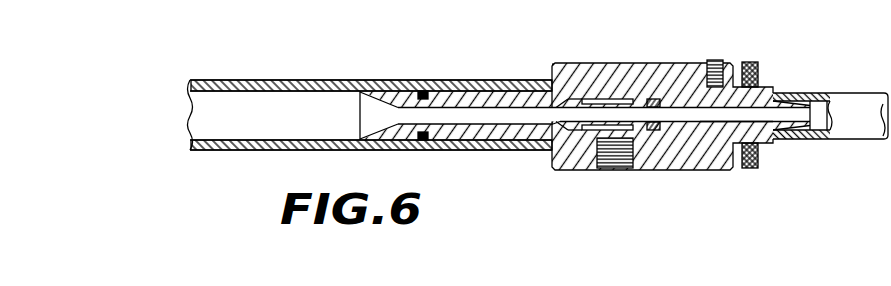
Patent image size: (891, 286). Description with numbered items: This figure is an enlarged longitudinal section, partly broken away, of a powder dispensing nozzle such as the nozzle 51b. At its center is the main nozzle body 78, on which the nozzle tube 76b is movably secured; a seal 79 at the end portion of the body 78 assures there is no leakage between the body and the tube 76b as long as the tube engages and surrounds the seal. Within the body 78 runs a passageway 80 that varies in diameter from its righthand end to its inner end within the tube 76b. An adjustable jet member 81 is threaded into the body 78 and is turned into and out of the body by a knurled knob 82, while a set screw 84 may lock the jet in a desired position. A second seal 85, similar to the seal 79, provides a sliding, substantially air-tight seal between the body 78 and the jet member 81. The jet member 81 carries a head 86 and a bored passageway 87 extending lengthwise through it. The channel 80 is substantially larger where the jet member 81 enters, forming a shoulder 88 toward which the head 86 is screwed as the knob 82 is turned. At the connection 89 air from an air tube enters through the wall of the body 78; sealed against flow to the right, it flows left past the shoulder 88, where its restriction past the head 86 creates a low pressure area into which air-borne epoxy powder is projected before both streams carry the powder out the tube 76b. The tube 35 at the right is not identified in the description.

The nozzle tube 76b is at (278, 80).
The seal 79 is at (423, 90).
The passageway 80 is at (473, 112).
The main nozzle body 78 is at (553, 108).
The shoulder 88 is at (575, 63).
The head 86 is at (570, 136).
The nozzle 51b is at (610, 63).
The set screw 84 is at (714, 60).
The knurled knob 82 is at (754, 62).
The bored passageway 87 is at (753, 118).
The capillary tube 35 is at (852, 102).
The connection for air tube 89 is at (617, 160).
The seal 85 is at (651, 132).
The adjustable jet member 81 is at (713, 126).